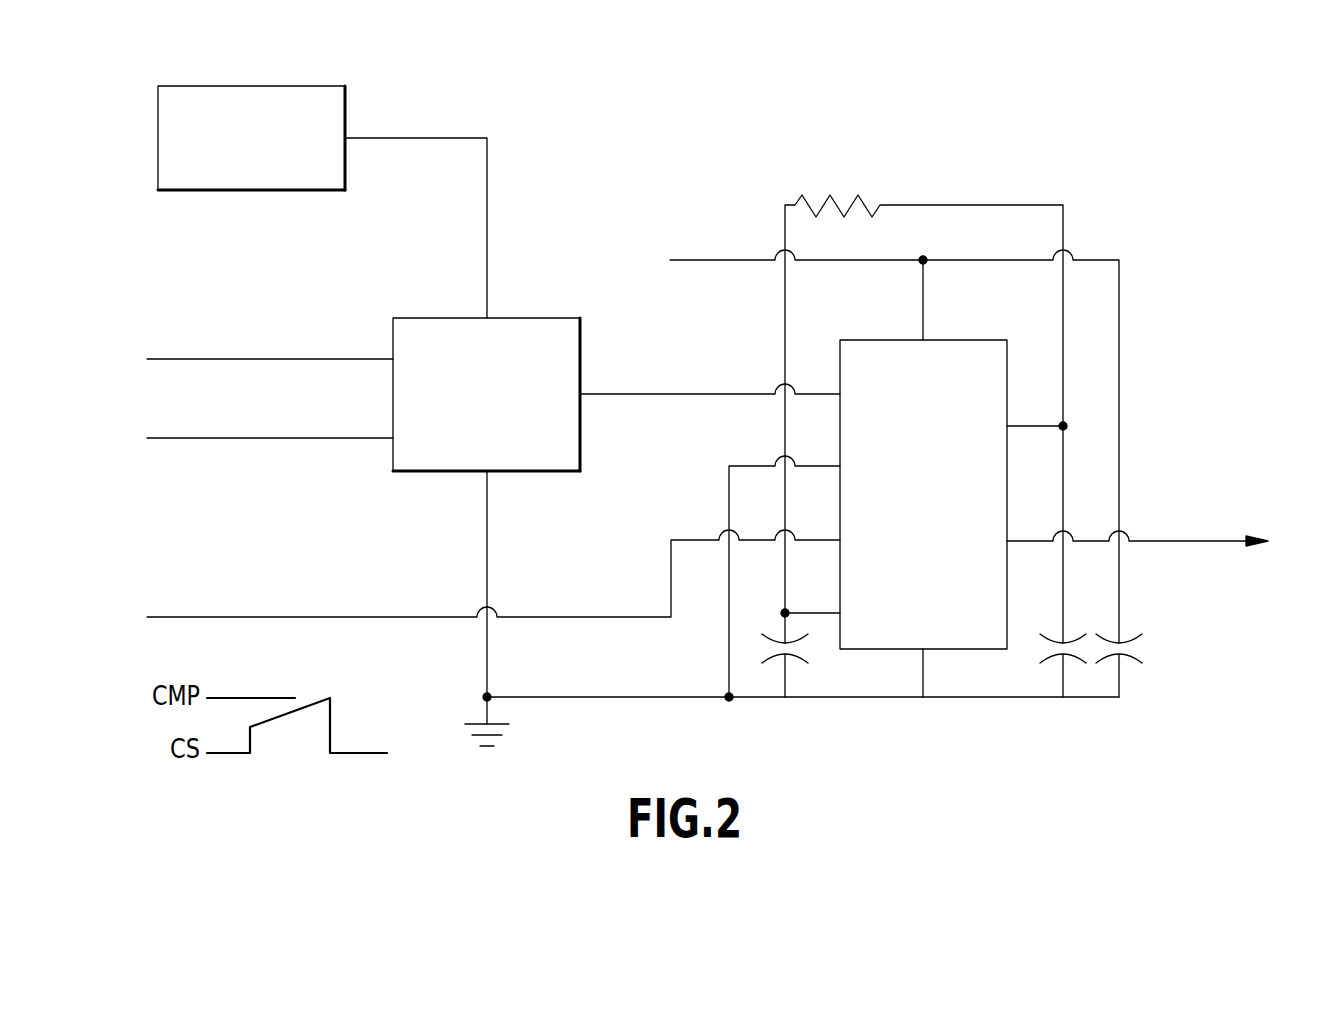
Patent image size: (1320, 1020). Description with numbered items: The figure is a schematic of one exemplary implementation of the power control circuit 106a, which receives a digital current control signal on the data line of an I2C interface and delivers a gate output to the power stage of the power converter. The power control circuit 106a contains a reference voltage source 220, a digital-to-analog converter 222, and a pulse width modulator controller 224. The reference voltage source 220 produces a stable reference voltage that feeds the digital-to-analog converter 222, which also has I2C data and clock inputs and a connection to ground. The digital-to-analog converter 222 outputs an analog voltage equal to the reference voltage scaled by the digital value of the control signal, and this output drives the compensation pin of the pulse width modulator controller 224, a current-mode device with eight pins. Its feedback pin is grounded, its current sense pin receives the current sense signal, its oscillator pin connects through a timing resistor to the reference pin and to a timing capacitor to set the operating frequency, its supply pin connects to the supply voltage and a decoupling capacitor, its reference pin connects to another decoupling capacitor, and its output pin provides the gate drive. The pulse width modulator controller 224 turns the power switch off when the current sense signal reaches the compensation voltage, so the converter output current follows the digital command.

The power control circuit 106a is at (1088, 112).
The reference voltage source 220 is at (258, 190).
The digital-to-analog converter 222 is at (530, 471).
The pulse width modulator controller 224 is at (868, 649).